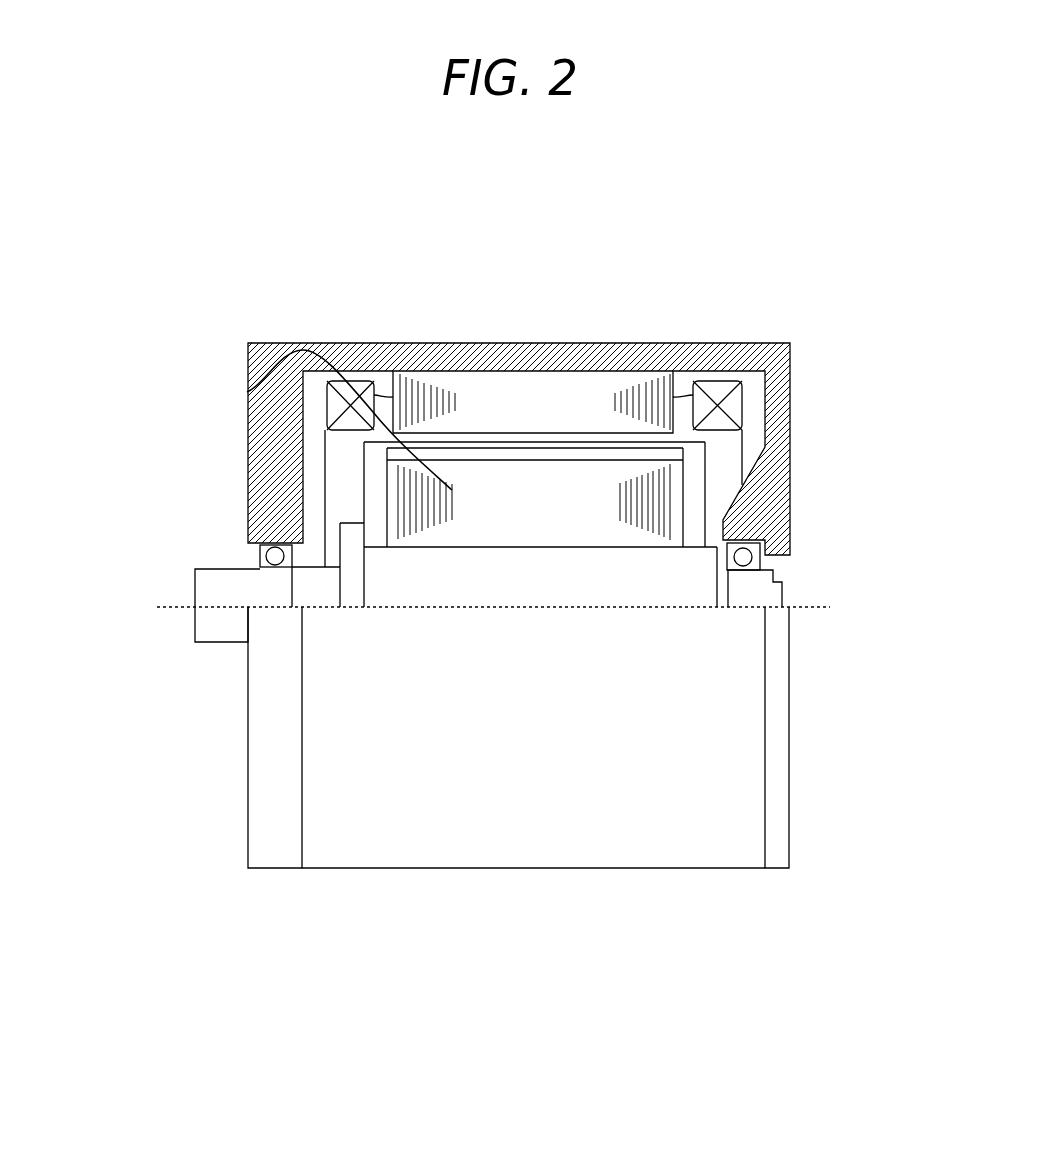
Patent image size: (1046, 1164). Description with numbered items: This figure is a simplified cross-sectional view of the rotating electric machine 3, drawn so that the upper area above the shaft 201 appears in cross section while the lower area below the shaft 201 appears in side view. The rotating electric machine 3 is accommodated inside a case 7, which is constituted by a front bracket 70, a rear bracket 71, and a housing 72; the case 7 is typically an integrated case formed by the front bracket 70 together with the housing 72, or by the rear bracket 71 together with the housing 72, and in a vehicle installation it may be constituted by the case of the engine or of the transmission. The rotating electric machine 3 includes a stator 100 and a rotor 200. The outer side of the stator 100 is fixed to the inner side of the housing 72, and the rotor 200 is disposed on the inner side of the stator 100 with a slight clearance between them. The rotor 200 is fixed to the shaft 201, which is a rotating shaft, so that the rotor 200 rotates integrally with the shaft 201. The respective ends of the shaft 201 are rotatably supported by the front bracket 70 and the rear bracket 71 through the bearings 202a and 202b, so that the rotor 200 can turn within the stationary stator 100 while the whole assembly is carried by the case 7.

The rotating electric machine 3 is at (753, 292).
The rotor 200 is at (247, 392).
The stator 100 is at (537, 400).
The bearing 202a is at (258, 562).
The bearing 202b is at (760, 547).
The shaft 201 is at (215, 597).
The case 7 is at (932, 1007).
The front bracket 70 is at (278, 868).
The rear bracket 71 is at (772, 868).
The housing 72 is at (497, 868).